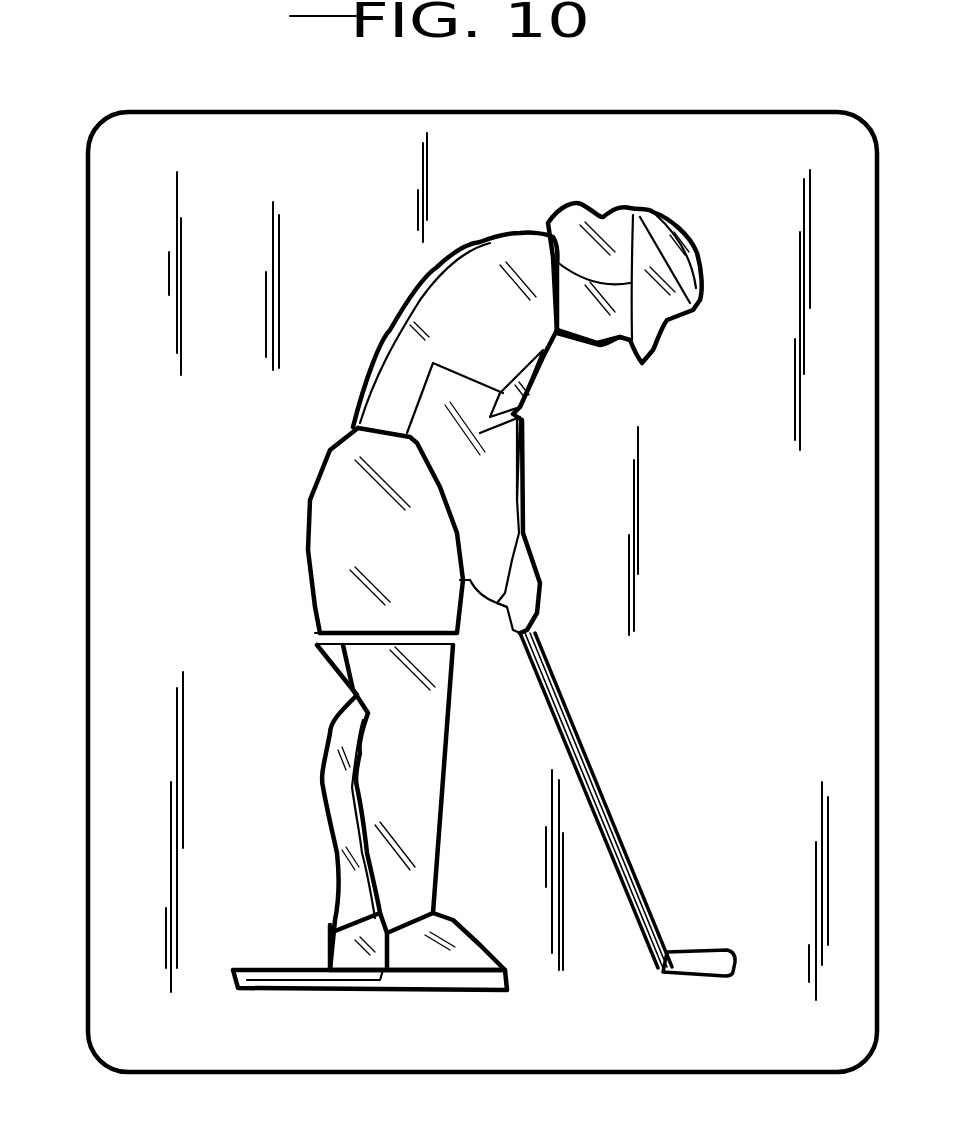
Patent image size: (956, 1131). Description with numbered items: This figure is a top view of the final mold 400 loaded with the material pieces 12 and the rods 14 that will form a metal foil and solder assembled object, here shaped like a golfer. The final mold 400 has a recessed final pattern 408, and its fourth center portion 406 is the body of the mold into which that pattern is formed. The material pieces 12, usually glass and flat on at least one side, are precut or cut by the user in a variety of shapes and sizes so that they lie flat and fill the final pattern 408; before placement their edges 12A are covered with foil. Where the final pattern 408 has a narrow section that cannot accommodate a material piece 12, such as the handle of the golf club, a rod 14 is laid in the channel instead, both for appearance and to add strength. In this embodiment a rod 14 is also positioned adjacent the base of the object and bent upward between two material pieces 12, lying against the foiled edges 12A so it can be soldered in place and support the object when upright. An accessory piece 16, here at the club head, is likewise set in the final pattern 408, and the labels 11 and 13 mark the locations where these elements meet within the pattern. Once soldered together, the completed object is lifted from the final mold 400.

The final mold 400 is at (684, 92).
The fourth center portion 406 is at (118, 271).
The final pattern 408 is at (573, 715).
The hand joint 11 is at (486, 596).
The material pieces 12 is at (340, 553).
The edges 12A is at (318, 493).
The leg panel 13 is at (312, 792).
The rods 14 is at (585, 767).
The accessory pieces 16 is at (713, 952).